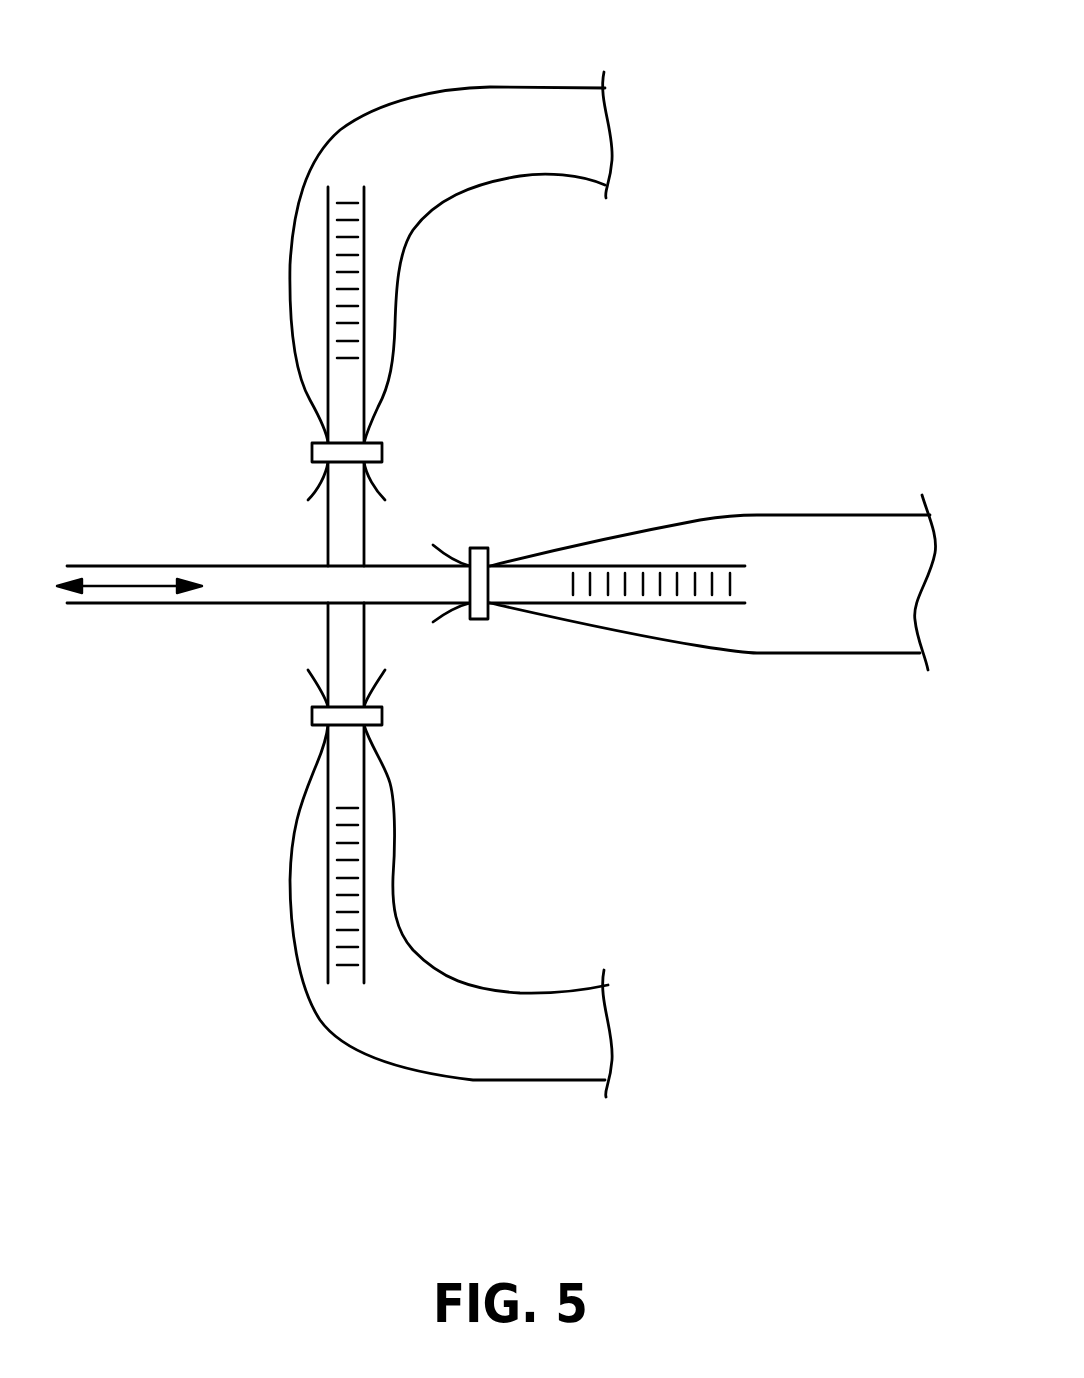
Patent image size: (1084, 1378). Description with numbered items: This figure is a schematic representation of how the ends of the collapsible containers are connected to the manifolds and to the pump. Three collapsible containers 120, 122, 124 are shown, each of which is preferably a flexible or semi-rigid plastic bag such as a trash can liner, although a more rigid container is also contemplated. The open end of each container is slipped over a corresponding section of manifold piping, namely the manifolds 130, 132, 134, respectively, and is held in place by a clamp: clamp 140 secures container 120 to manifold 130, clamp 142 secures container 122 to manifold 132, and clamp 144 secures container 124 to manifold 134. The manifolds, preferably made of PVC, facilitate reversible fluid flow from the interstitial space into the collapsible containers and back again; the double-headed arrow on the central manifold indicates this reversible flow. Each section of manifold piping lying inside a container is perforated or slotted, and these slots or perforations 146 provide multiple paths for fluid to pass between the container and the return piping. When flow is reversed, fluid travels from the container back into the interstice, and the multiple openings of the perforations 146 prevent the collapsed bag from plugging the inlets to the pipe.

The collapsible container 120 is at (493, 113).
The collapsible container 122 is at (815, 533).
The collapsible container 124 is at (490, 1055).
The manifold 130 is at (348, 403).
The manifold 132 is at (527, 583).
The manifold 134 is at (345, 762).
The clamp 140 is at (323, 453).
The clamp 142 is at (478, 558).
The clamp 144 is at (370, 715).
The slots or perforations 146 is at (350, 283).